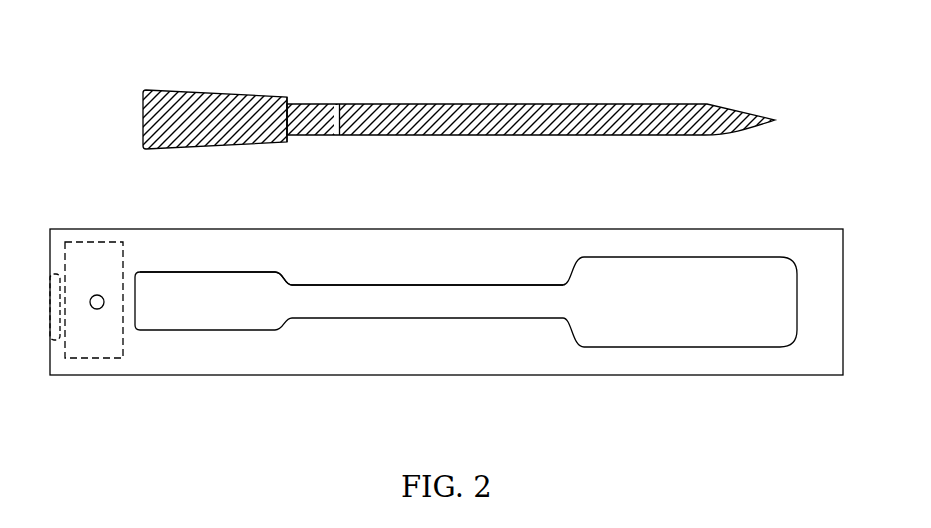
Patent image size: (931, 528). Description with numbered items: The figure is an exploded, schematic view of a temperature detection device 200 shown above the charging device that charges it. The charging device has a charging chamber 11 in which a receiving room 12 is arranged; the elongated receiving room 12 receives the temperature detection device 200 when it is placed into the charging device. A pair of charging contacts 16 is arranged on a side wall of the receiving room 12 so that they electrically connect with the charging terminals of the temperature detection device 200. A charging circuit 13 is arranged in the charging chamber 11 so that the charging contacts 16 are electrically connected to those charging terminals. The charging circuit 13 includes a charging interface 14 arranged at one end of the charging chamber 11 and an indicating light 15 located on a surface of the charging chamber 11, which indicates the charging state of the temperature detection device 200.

The temperature detection device 200 is at (556, 99).
The charging chamber 11 is at (780, 240).
The receiving room 12 is at (233, 322).
The charging circuit 13 is at (88, 246).
The charging interface 14 is at (50, 295).
The indicating light 15 is at (100, 310).
The charging contacts 16 is at (140, 273).